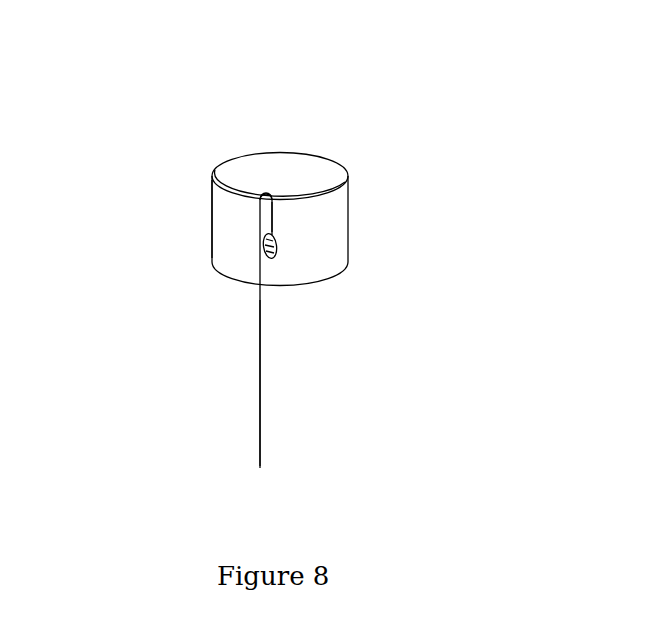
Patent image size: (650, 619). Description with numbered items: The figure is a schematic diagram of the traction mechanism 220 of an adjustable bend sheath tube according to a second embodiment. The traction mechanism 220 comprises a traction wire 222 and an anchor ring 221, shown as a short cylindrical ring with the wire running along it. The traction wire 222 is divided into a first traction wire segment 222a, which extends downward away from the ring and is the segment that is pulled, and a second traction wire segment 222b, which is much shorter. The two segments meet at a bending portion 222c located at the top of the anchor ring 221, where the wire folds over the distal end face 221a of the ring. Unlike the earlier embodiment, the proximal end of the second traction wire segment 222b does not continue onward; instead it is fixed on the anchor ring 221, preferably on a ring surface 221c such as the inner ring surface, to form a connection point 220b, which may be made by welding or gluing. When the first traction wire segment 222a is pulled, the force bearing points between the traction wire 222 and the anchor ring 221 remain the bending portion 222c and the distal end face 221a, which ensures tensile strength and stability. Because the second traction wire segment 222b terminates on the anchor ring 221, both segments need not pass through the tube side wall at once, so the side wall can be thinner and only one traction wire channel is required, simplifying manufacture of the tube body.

The traction mechanism 220 is at (288, 264).
The connection point 220b is at (277, 252).
The anchor ring 221 is at (288, 223).
The distal end face 221a is at (337, 190).
The ring surface 221c is at (227, 228).
The traction wire 222 is at (271, 290).
The first traction wire segment 222a is at (260, 405).
The second traction wire segment 222b is at (272, 217).
The bending portion 222c is at (264, 193).